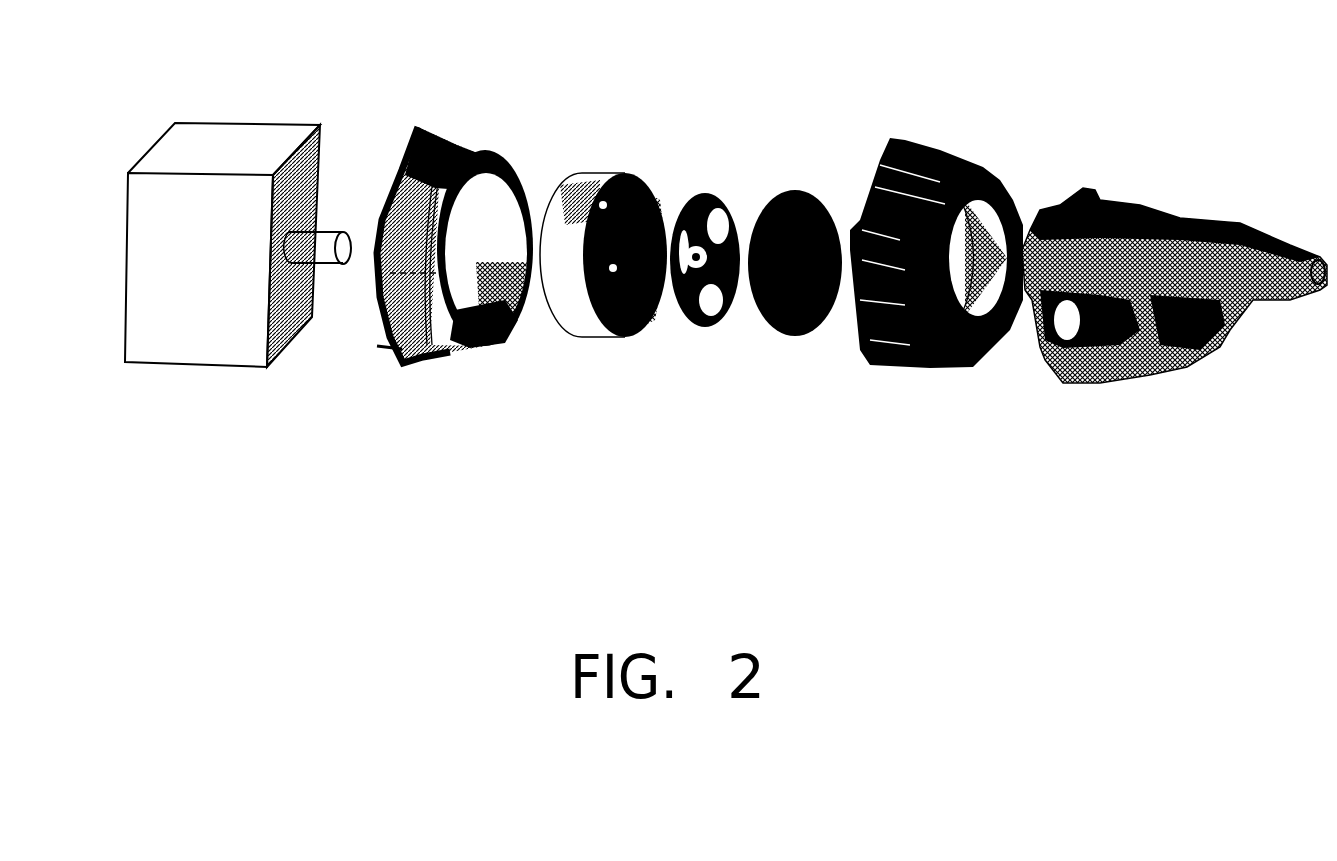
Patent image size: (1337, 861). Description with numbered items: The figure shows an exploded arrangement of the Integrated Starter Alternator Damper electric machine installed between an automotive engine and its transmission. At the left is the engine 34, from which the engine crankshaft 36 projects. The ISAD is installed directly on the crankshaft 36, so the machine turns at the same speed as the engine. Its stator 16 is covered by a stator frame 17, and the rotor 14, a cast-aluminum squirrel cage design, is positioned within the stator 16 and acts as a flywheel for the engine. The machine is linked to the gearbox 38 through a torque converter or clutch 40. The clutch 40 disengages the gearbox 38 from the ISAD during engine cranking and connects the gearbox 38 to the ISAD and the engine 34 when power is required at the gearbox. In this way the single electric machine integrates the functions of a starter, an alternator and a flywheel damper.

The engine 34 is at (217, 290).
The engine crankshaft 36 is at (327, 237).
The stator 16 is at (463, 152).
The rotor 14 is at (600, 172).
The torque converter or clutch 40 is at (797, 188).
The stator frame 17 is at (947, 157).
The gearbox 38 is at (1250, 300).